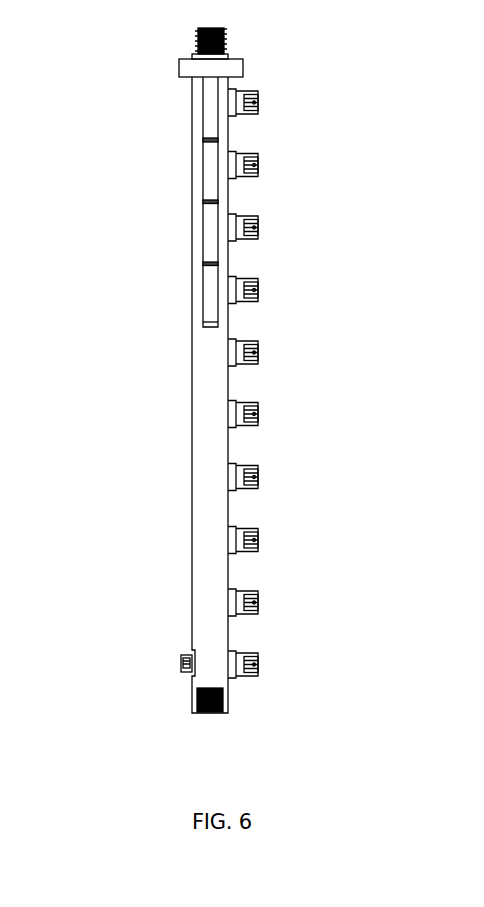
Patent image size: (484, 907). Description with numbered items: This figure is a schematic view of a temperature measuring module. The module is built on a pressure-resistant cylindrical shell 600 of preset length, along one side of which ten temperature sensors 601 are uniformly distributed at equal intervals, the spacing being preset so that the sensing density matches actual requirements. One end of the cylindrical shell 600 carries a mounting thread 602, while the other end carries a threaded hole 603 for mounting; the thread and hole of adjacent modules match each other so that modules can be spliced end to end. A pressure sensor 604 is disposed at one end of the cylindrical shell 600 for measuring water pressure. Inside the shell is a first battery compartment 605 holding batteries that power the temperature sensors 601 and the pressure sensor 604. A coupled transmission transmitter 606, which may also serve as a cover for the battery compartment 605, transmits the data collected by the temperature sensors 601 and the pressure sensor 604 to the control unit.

The cylindrical shell 600 is at (203, 425).
The temperature sensors 601 is at (235, 415).
The mounting thread 602 is at (197, 42).
The threaded hole for mounting 603 is at (222, 690).
The pressure sensor 604 is at (183, 658).
The first battery compartment 605 is at (210, 163).
The coupled transmission transmitter 606 is at (232, 70).